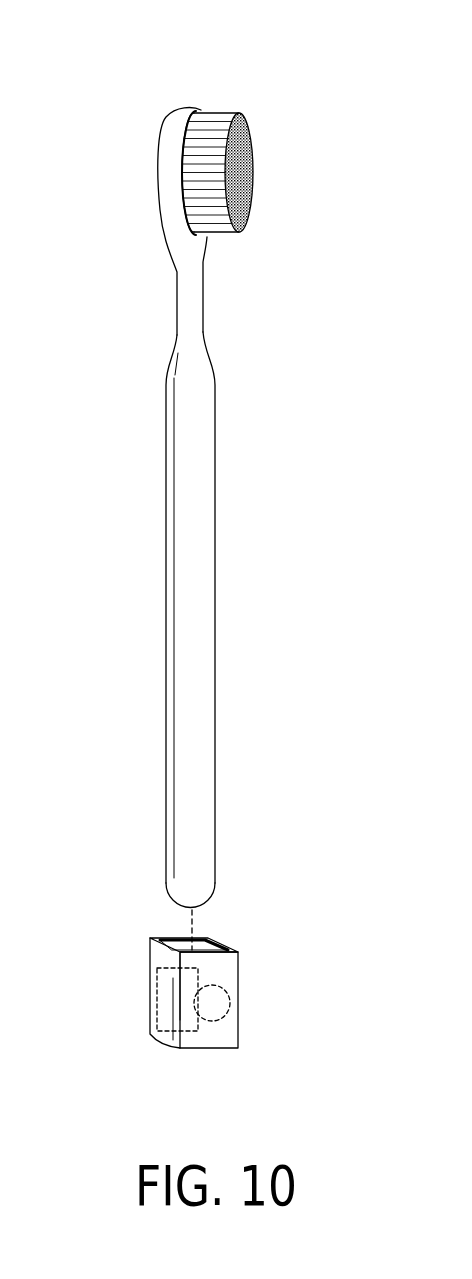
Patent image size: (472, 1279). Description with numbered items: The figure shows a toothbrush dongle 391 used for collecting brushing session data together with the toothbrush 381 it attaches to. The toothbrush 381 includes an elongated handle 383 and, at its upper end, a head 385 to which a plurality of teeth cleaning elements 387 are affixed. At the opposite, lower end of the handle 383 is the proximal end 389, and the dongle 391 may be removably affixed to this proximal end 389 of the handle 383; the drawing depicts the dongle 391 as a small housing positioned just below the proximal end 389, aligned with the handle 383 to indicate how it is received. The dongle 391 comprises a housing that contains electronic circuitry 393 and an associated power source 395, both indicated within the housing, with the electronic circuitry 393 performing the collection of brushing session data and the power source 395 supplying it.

The toothbrush 381 is at (113, 121).
The handle 383 is at (215, 592).
The head 385 is at (201, 110).
The teeth cleaning elements 387 is at (240, 178).
The proximal end 389 is at (202, 880).
The toothbrush dongle 391 is at (238, 1002).
The electronic circuitry 393 is at (168, 1005).
The power source 395 is at (210, 1005).